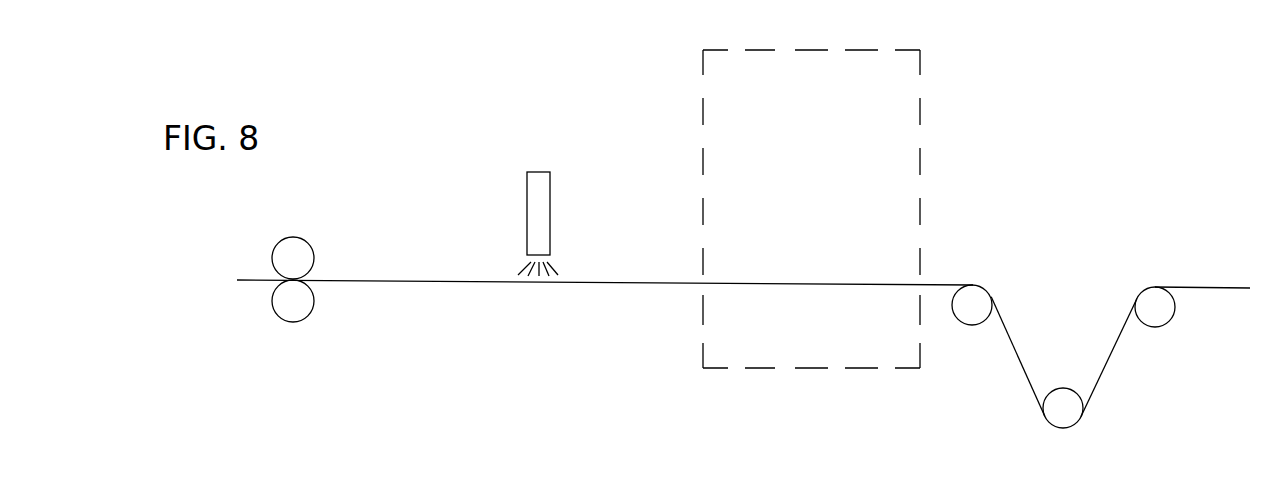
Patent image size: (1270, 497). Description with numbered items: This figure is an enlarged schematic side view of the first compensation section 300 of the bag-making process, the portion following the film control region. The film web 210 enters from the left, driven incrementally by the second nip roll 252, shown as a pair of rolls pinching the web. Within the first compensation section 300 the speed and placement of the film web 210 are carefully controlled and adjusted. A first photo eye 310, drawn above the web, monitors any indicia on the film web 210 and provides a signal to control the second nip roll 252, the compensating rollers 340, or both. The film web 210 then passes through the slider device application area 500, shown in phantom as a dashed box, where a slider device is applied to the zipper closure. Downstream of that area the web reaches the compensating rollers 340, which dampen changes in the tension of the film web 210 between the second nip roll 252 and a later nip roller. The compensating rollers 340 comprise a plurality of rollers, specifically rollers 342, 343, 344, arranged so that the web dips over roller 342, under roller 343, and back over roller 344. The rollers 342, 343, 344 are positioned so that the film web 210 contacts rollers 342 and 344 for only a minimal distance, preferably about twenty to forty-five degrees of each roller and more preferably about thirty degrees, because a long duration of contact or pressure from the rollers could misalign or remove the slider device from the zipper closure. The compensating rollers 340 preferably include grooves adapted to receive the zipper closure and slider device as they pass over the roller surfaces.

The film web 210 is at (658, 283).
The second nip roll 252 is at (308, 240).
The first compensation section 300 is at (438, 130).
The first photo eye 310 is at (540, 171).
The compensating rollers 340 is at (1069, 326).
The roller 342 is at (970, 325).
The roller 343 is at (1063, 388).
The roller 344 is at (1162, 327).
The slider device application area 500 is at (810, 50).